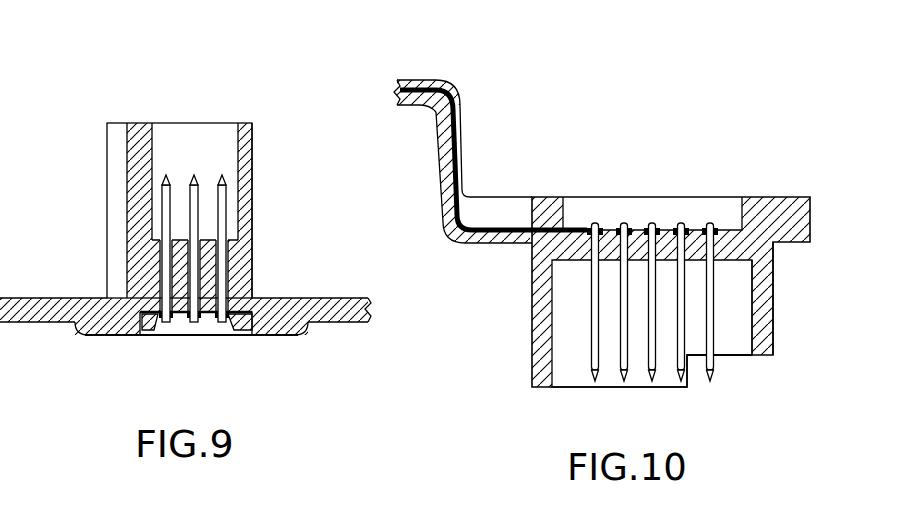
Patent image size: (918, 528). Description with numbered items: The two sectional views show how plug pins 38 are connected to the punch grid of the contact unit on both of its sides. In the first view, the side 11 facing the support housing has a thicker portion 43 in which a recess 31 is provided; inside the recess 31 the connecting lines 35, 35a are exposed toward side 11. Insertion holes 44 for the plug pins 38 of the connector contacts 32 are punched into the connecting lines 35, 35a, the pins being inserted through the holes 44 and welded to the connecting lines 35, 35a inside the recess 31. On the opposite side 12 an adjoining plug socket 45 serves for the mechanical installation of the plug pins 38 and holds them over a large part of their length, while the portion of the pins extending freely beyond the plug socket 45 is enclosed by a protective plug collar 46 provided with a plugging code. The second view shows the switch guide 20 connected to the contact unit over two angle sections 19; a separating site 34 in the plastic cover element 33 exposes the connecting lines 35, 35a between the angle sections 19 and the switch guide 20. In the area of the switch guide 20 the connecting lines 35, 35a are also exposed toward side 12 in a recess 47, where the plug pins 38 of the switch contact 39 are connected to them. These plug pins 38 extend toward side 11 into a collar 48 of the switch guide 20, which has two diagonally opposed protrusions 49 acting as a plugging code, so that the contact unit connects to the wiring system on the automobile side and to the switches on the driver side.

In FIG. 9, the side 11 is at (350, 327).
In FIG. 9, the side 12 is at (318, 300).
In FIG. 10, the side 12 is at (430, 82).
In FIG. 10, the angle sections 19 is at (447, 100).
In FIG. 10, the switch guide 20 is at (783, 398).
In FIG. 9, the recess 31 is at (180, 333).
In FIG. 9, the connector contacts 32 is at (181, 120).
In FIG. 9, the plastic cover element 33 is at (78, 336).
In FIG. 10, the plastic cover element 33 is at (407, 82).
In FIG. 10, the separating site 34 is at (507, 210).
In FIG. 9, the connecting line 35 is at (185, 358).
In FIG. 10, the connecting line 35 is at (493, 196).
In FIG. 9, the connecting line 35a is at (145, 337).
In FIG. 10, the connecting line 35a is at (510, 237).
In FIG. 9, the plug pins 38 is at (197, 183).
In FIG. 10, the plug pins 38 is at (623, 228).
In FIG. 10, the switch contact 39 is at (567, 380).
In FIG. 9, the thicker portion 43 is at (298, 325).
In FIG. 9, the insertion holes 44 is at (253, 297).
In FIG. 9, the plug socket 45 is at (133, 253).
In FIG. 9, the protective plug collar 46 is at (247, 195).
In FIG. 10, the recess 47 is at (698, 213).
In FIG. 10, the collar 48 is at (760, 318).
In FIG. 10, the protrusions 49 is at (735, 355).